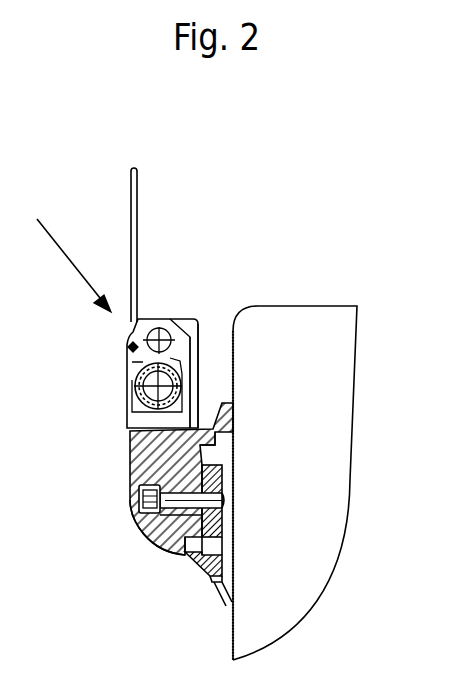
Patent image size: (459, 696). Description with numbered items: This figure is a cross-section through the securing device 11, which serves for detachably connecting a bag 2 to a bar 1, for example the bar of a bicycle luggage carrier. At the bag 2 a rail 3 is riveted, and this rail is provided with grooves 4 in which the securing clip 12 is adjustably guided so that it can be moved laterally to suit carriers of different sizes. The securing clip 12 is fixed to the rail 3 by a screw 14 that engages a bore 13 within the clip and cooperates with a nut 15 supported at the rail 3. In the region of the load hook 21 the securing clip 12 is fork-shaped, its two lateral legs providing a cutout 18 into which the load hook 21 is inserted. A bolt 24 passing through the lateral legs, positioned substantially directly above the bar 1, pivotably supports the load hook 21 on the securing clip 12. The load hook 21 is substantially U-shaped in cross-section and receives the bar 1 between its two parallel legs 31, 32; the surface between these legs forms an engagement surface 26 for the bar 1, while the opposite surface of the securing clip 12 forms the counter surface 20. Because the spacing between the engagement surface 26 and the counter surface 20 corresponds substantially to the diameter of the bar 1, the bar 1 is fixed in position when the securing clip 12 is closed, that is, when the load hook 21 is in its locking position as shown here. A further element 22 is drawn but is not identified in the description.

The bar 1 is at (142, 416).
The bag 2 is at (317, 297).
The rail 3 is at (207, 585).
The grooves 4 is at (158, 547).
The securing device 11 is at (64, 249).
The securing clip 12 is at (130, 473).
The bores 13 is at (143, 531).
The screws 14 is at (139, 495).
The nuts 15 is at (222, 522).
The cutout 18 is at (190, 319).
The counter surface 20 is at (178, 418).
The load hook 21 is at (223, 320).
The lever rod 22 is at (125, 184).
The bolt 24 is at (164, 319).
The engagement surface 26 is at (128, 393).
The leg 31 is at (172, 398).
The leg 32 is at (125, 398).